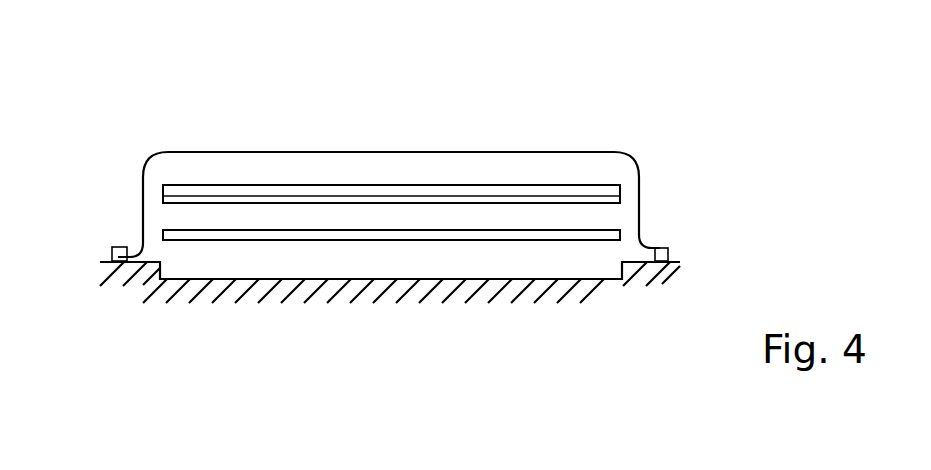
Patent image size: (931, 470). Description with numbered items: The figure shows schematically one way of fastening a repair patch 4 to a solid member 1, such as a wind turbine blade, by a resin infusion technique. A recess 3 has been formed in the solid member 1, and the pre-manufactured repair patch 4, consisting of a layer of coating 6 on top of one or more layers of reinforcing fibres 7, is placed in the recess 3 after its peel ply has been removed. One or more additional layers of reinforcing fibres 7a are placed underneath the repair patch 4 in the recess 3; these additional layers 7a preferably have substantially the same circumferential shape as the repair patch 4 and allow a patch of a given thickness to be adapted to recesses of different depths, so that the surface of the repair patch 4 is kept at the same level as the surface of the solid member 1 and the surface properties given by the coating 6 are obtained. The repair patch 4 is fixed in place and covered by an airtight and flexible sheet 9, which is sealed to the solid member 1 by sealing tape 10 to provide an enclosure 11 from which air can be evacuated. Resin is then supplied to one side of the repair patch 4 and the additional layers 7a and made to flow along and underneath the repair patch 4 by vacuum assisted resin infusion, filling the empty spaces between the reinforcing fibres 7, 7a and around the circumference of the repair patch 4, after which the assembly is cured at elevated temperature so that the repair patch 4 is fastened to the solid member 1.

The solid member 1 is at (128, 295).
The recess 3 is at (235, 282).
The repair patch 4 is at (630, 192).
The layer of coating 6 is at (168, 186).
The reinforcing fibres 7 is at (168, 197).
The additional layers of reinforcing fibres 7a is at (620, 235).
The airtight and flexible sheet 9 is at (368, 152).
The sealing tape 10 is at (103, 263).
The enclosure 11 is at (207, 172).